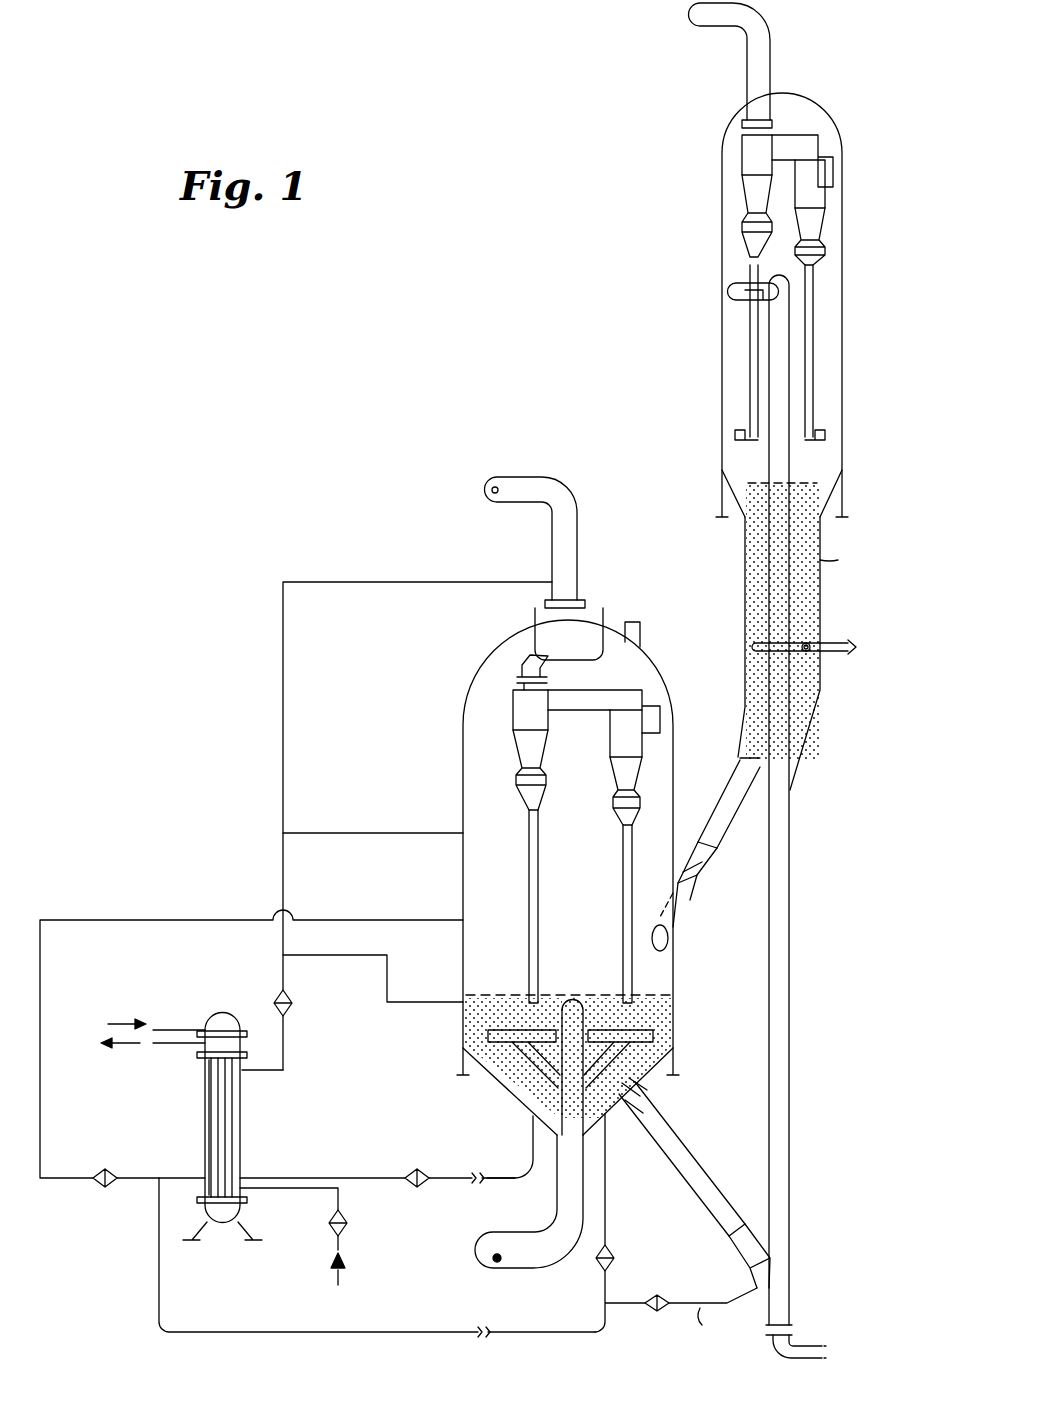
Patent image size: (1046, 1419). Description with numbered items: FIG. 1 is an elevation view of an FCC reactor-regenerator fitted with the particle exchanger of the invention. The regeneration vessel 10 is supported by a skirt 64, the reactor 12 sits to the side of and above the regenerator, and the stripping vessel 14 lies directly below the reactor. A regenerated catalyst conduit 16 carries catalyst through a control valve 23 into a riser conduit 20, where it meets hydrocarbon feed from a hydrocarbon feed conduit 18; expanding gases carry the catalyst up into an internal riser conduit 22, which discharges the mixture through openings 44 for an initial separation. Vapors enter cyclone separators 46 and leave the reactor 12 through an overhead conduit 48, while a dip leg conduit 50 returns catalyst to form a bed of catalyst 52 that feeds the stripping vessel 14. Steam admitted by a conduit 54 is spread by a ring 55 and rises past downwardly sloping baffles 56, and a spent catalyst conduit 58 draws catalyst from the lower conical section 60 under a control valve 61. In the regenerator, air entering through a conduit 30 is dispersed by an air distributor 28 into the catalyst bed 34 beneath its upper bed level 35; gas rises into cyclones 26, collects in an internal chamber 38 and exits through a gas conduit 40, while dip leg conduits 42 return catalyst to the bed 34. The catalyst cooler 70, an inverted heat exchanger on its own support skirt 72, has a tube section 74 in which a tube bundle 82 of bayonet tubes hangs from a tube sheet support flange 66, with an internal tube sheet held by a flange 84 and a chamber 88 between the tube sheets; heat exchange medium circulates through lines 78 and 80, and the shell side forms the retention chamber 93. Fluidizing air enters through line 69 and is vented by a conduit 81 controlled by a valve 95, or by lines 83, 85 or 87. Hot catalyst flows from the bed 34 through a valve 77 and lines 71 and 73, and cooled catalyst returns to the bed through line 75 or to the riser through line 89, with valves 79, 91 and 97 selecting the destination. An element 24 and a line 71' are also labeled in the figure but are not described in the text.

The regeneration vessel 10 is at (450, 719).
The reactor 12 is at (848, 375).
The stripping vessel 14 is at (822, 672).
The regenerated catalyst conduit 16 is at (662, 1122).
The hydrocarbon feed conduit 18 is at (810, 1345).
The riser conduit 20 is at (795, 1190).
The internal riser conduit 22 is at (800, 728).
The control valve 23 is at (740, 1252).
The reactor wall 24 is at (463, 776).
The cyclones 26 is at (513, 698).
The air distributor 28 is at (470, 1085).
The conduit 30 is at (513, 1272).
The catalyst bed 34 is at (675, 1005).
The upper bed level 35 is at (660, 985).
The internal chamber 38 is at (580, 646).
The gas conduit 40 is at (510, 510).
The dip leg conduits 42 is at (622, 858).
The openings 44 is at (736, 298).
The cyclone separators 46 is at (742, 158).
The overhead conduit 48 is at (772, 42).
The dip leg conduit 50 is at (750, 350).
The bed of catalyst 52 is at (835, 490).
The conduit 54 is at (835, 638).
The ring 55 is at (752, 660).
The baffles 56 is at (843, 561).
The spent catalyst conduit 58 is at (730, 822).
The lower conical section 60 is at (798, 752).
The control valve 61 is at (700, 860).
The skirt 64 is at (673, 1050).
The tube sheet support flange 66 is at (262, 1068).
The line 69 is at (340, 1252).
The catalyst cooler 70 is at (192, 1146).
The line 71 is at (377, 1276).
The recycle line 71' is at (251, 1054).
The support skirt 72 is at (210, 1242).
The conduit 73 is at (440, 1185).
The tube section 74 is at (242, 1135).
The line 75 is at (607, 1200).
The valve 77 is at (410, 1165).
The line 78 is at (158, 1025).
The valve 79 is at (95, 1188).
The line 80 is at (150, 1048).
The conduit 81 is at (285, 1035).
The tube bundle 82 is at (230, 1100).
The line 83 is at (387, 950).
The flange 84 is at (198, 1055).
The line 85 is at (380, 833).
The line 87 is at (360, 582).
The chamber 88 is at (228, 1013).
The line 89 is at (701, 1330).
The valve 91 is at (614, 1252).
The retention chamber 93 is at (208, 1095).
The valve 95 is at (292, 1005).
The valve 97 is at (652, 1312).